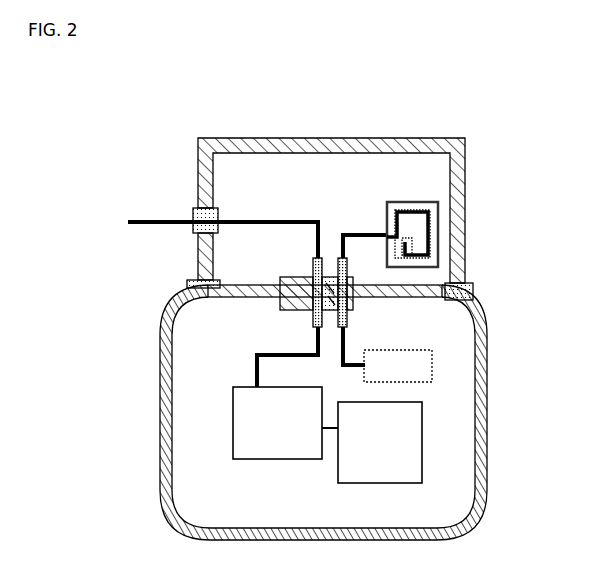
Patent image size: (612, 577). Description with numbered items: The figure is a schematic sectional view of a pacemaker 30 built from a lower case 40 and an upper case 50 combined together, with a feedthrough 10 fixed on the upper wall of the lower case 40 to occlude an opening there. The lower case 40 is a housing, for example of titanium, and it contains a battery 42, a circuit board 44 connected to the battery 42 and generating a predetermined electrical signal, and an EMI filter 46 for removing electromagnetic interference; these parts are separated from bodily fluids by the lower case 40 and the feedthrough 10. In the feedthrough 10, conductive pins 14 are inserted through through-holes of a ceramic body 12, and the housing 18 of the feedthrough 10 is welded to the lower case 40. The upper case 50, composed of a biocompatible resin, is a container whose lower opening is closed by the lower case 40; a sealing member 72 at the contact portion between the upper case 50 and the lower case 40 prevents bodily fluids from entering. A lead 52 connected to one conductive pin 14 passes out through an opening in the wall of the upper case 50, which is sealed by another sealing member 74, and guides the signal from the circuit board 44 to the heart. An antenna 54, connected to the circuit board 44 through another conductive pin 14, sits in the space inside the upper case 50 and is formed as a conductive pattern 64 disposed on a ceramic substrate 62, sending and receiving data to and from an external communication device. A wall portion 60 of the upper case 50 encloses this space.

The feedthrough 10 is at (220, 315).
The ceramic body 12 is at (322, 307).
The conductive pin 14 is at (307, 315).
The housing 18 is at (303, 278).
The pacemaker 30 is at (359, 168).
The lower case 40 is at (487, 424).
The battery 42 is at (363, 463).
The circuit board 44 is at (270, 445).
The EMI filter 46 is at (420, 357).
The upper case 50 is at (192, 200).
The lead 52 is at (118, 222).
The antenna 54 is at (475, 234).
The shield 60 is at (440, 150).
The ceramic substrate 62 is at (418, 223).
The conductive pattern 64 is at (432, 246).
The sealing member 72 is at (187, 282).
The sealing member 74 is at (219, 210).